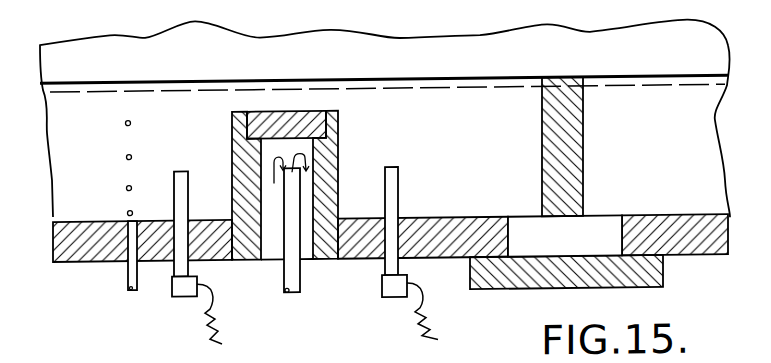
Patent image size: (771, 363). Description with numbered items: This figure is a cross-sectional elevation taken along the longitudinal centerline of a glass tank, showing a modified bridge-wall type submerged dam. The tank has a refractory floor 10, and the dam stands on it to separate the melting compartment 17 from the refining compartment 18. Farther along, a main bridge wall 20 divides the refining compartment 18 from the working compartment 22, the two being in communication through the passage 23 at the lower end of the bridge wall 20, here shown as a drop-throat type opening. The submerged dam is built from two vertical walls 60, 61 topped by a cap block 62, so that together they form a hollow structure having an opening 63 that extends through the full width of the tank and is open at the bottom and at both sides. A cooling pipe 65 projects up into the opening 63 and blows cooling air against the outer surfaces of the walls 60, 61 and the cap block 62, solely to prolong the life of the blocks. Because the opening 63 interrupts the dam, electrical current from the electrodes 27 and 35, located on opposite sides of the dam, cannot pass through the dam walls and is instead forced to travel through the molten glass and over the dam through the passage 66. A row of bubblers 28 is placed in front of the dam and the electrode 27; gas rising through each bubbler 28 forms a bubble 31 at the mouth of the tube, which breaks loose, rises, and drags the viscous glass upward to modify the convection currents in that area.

The floor 10 is at (64, 244).
The melting compartment 17 is at (158, 106).
The refining compartment 18 is at (478, 159).
The main bridge wall 20 is at (583, 102).
The working compartment 22 is at (690, 149).
The passage 23 is at (598, 230).
The electrode 27 is at (173, 280).
The bubbler 28 is at (128, 275).
The bubble 31 is at (124, 119).
The electrode 35 is at (397, 285).
The vertical wall 60 is at (286, 154).
The vertical wall 61 is at (333, 145).
The cap block 62 is at (302, 116).
The opening 63 is at (307, 243).
The cooling pipe 65 is at (292, 281).
The passage 66 is at (262, 98).